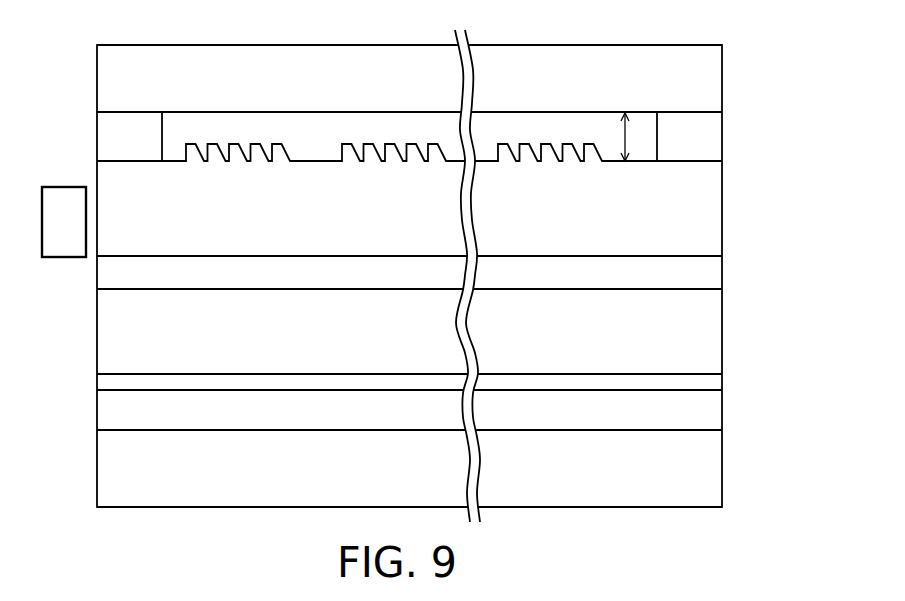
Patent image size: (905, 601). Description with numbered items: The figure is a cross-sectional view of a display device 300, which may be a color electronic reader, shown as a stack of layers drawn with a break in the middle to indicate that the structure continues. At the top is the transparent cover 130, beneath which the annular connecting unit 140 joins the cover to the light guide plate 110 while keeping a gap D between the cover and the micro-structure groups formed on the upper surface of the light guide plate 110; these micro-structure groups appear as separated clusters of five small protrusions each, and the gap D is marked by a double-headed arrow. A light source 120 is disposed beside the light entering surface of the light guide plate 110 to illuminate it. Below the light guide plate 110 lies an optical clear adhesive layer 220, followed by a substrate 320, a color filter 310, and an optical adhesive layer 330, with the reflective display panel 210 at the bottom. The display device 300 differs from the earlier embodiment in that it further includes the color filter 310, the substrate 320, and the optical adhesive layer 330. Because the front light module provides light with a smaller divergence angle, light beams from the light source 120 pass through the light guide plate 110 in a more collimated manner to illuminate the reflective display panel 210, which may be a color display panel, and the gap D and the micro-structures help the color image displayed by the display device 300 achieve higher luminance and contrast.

The display device 300 is at (781, 528).
The transparent cover 130 is at (710, 75).
The annular connecting unit 140 is at (710, 142).
The light guide plate 110 is at (710, 211).
The optical clear adhesive layer 220 is at (710, 274).
The substrate 320 is at (710, 337).
The color filter 310 is at (710, 382).
The optical adhesive layer 330 is at (710, 413).
The reflective display panel 210 is at (710, 469).
The light source 120 is at (63, 205).
The gap D is at (622, 133).